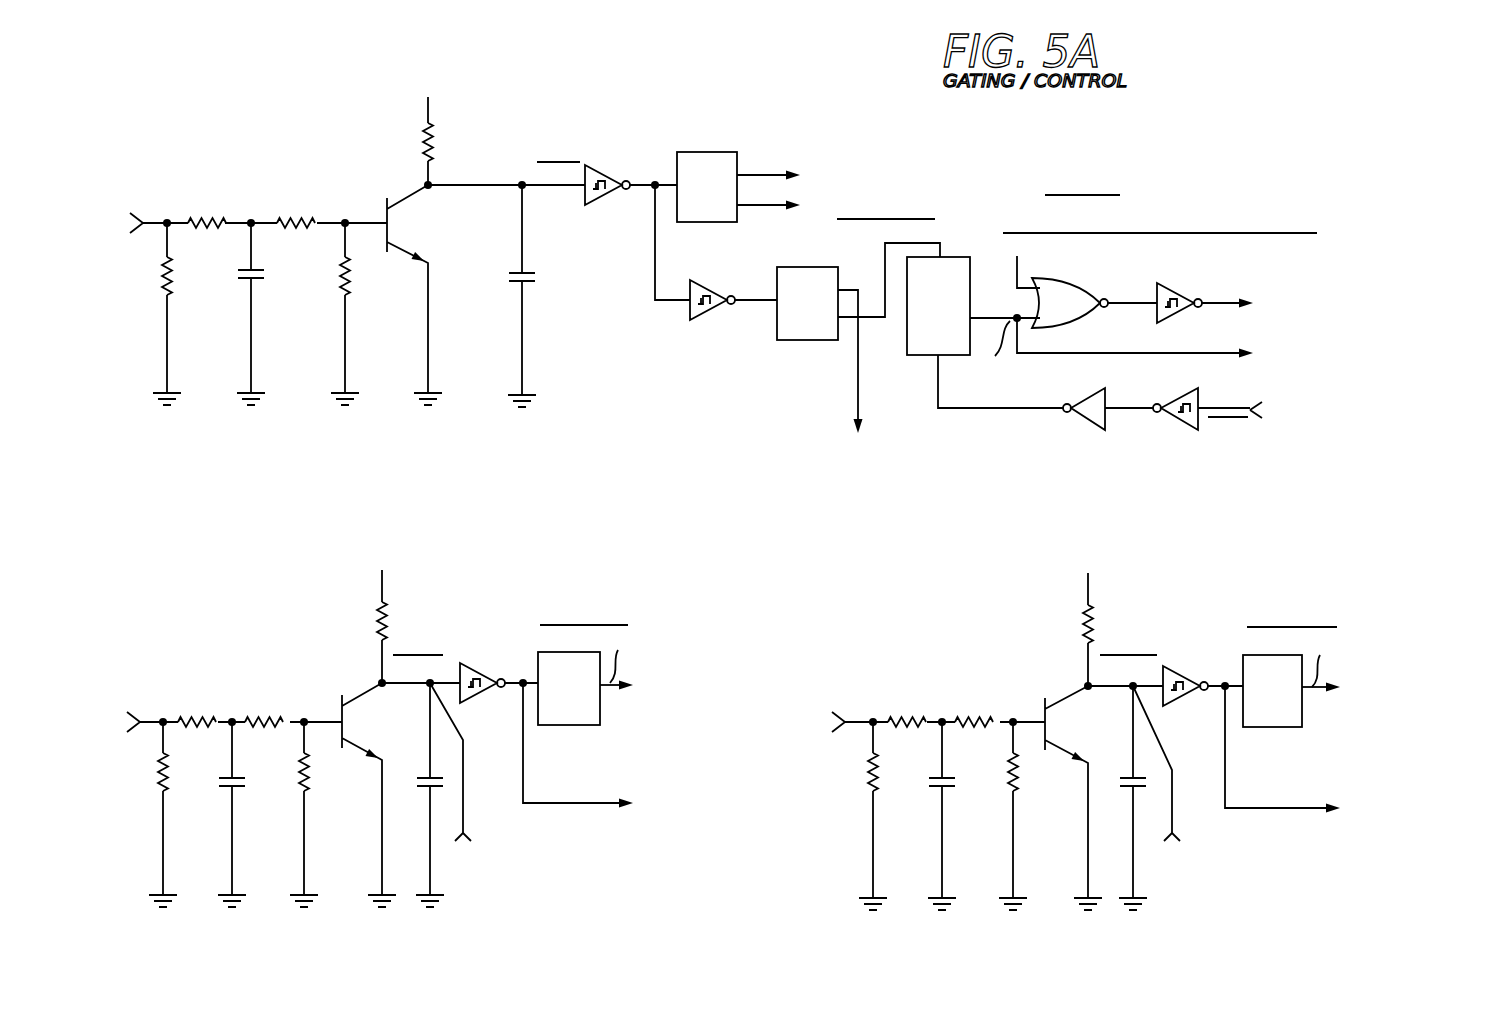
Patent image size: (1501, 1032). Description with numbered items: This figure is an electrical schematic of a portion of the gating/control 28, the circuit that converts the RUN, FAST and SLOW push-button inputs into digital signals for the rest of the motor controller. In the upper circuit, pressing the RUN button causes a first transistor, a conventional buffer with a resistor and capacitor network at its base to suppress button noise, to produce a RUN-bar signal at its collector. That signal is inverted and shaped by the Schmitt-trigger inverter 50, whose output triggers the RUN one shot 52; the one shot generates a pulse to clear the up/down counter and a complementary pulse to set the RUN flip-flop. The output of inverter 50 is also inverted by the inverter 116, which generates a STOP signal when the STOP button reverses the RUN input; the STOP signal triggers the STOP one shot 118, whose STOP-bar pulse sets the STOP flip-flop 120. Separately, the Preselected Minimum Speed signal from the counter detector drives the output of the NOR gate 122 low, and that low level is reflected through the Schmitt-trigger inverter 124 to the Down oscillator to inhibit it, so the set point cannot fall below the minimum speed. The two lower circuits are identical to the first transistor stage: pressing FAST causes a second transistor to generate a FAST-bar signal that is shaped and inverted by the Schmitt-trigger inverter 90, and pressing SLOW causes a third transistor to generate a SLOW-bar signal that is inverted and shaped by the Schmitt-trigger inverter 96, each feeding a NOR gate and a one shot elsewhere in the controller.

The gating/control 28 is at (1064, 131).
The Schmitt-trigger inverter 50 is at (603, 169).
The RUN one shot 52 is at (722, 152).
The inverter 116 is at (711, 284).
The STOP one shot 118 is at (814, 267).
The STOP flip-flop 120 is at (918, 345).
The NOR gate 122 is at (1070, 291).
The Schmitt-trigger inverter 124 is at (1172, 292).
The Schmitt-trigger inverter 90 is at (486, 657).
The Schmitt-trigger inverter 96 is at (1197, 659).